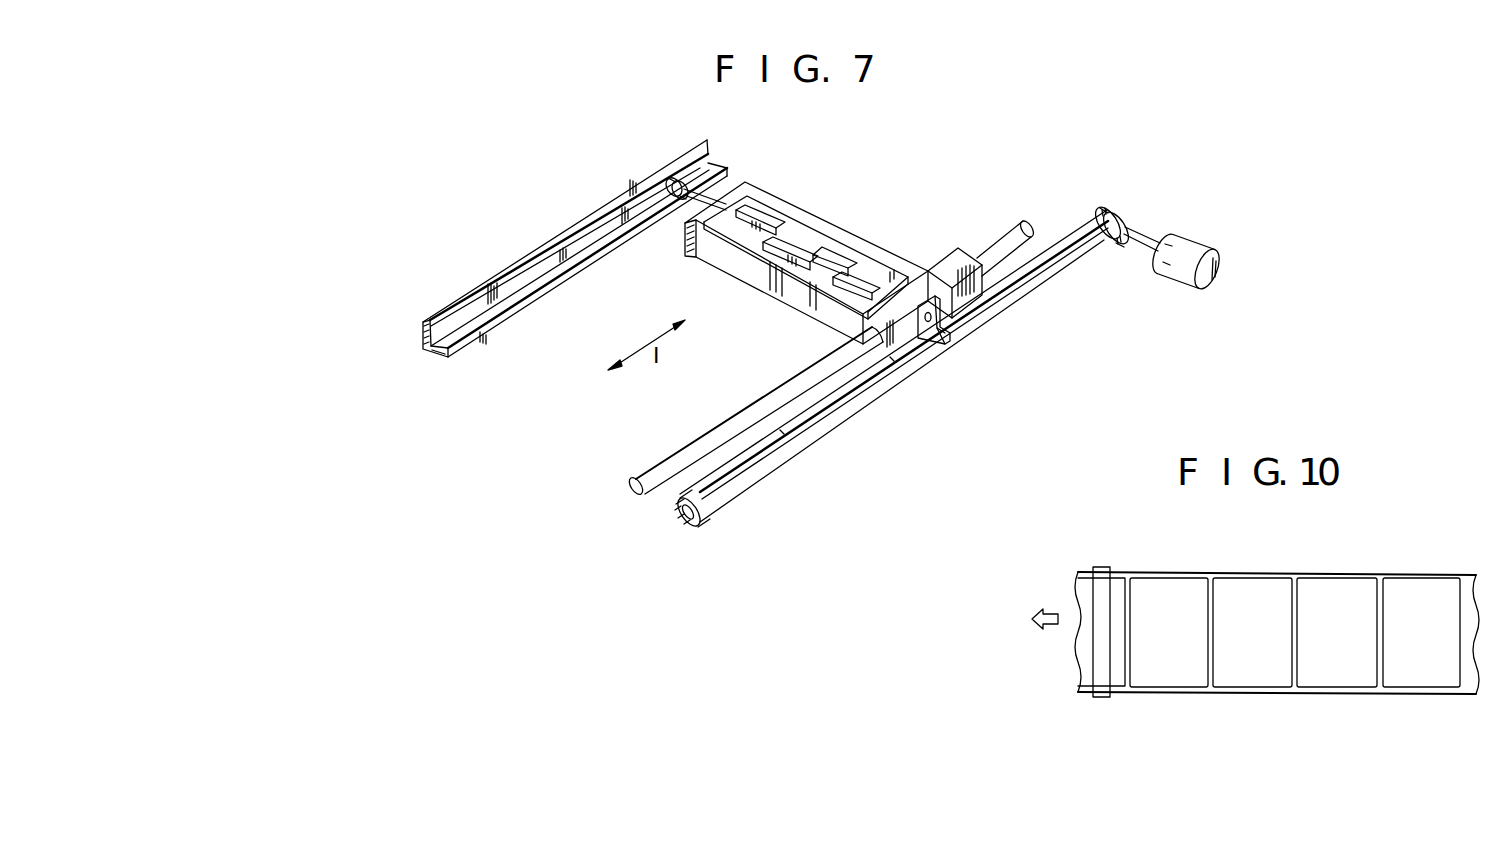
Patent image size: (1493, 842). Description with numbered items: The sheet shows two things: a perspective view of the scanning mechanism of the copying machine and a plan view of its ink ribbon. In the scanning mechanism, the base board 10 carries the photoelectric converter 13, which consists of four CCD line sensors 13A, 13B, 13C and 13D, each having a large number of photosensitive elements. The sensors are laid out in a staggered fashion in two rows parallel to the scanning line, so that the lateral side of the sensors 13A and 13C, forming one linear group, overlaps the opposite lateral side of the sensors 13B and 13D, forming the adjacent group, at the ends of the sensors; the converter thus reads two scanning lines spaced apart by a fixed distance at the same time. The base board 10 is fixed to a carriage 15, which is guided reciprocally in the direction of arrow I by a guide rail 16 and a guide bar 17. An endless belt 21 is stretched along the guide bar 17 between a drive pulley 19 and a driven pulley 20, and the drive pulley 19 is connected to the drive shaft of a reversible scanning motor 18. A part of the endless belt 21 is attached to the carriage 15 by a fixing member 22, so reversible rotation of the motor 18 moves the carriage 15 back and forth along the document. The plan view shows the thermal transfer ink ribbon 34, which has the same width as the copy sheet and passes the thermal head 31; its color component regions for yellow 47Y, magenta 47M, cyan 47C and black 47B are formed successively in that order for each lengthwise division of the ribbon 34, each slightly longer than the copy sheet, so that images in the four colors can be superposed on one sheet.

In FIG. 7, the base board 10 is at (733, 212).
In FIG. 7, the photoelectric converter 13 is at (807, 238).
In FIG. 7, the CCD line sensor 13A is at (737, 222).
In FIG. 7, the CCD line sensor 13B is at (788, 247).
In FIG. 7, the CCD line sensor 13C is at (836, 254).
In FIG. 7, the CCD line sensor 13D is at (863, 280).
In FIG. 7, the carriage 15 is at (862, 249).
In FIG. 7, the guide rail 16 is at (555, 239).
In FIG. 7, the guide bar 17 is at (1010, 228).
In FIG. 7, the reversible scanning motor 18 is at (1178, 270).
In FIG. 7, the drive pulley 19 is at (1127, 221).
In FIG. 7, the driven pulley 20 is at (698, 521).
In FIG. 7, the endless belt 21 is at (826, 432).
In FIG. 7, the fixing member 22 is at (952, 330).
In FIG. 10, the thermal head 31 is at (1100, 568).
In FIG. 10, the thermal transfer ink ribbon 34 is at (1328, 573).
In FIG. 10, the yellow filter 47Y is at (1162, 676).
In FIG. 10, the magenta filter 47M is at (1255, 676).
In FIG. 10, the cyan filter 47C is at (1336, 676).
In FIG. 10, the black filter 47B is at (1420, 676).